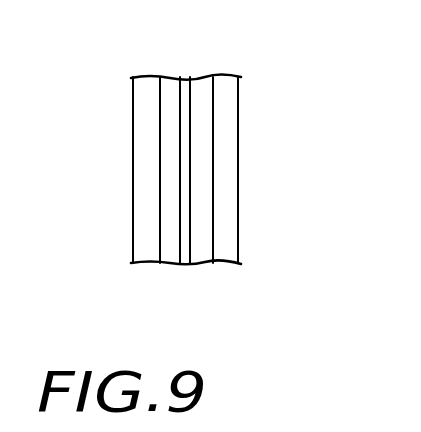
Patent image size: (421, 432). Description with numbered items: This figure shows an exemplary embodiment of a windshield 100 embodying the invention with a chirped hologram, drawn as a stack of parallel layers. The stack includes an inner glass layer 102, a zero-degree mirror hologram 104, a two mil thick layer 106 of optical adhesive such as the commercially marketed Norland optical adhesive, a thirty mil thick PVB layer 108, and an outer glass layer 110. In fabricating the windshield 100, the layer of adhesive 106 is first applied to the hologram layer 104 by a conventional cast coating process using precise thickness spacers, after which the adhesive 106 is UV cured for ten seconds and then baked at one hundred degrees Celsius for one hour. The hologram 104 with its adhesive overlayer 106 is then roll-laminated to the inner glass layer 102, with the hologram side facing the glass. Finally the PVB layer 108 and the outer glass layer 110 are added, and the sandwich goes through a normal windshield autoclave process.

The windshield 100 is at (292, 137).
The inner glass layer 102 is at (140, 80).
The zero-degree mirror hologram 104 is at (167, 256).
The layer of optical adhesive 106 is at (183, 84).
The PVB layer 108 is at (203, 253).
The outer glass layer 110 is at (240, 79).